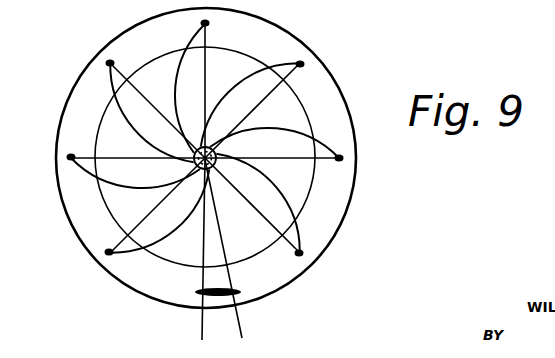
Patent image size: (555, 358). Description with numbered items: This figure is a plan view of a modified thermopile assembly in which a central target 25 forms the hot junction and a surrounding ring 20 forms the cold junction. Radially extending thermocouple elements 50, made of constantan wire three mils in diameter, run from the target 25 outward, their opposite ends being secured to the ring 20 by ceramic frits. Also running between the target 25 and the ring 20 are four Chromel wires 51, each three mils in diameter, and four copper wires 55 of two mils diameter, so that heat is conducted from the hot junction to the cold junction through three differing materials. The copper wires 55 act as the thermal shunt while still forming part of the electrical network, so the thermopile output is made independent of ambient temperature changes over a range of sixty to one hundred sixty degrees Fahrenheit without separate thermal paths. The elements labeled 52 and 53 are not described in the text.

The ring 20 is at (327, 83).
The target 25 is at (182, 160).
The thermocouple elements 50 is at (137, 90).
The wires 51 is at (118, 110).
The support rod 52 is at (243, 327).
The shaft 53 is at (202, 330).
The wires 55 is at (179, 65).